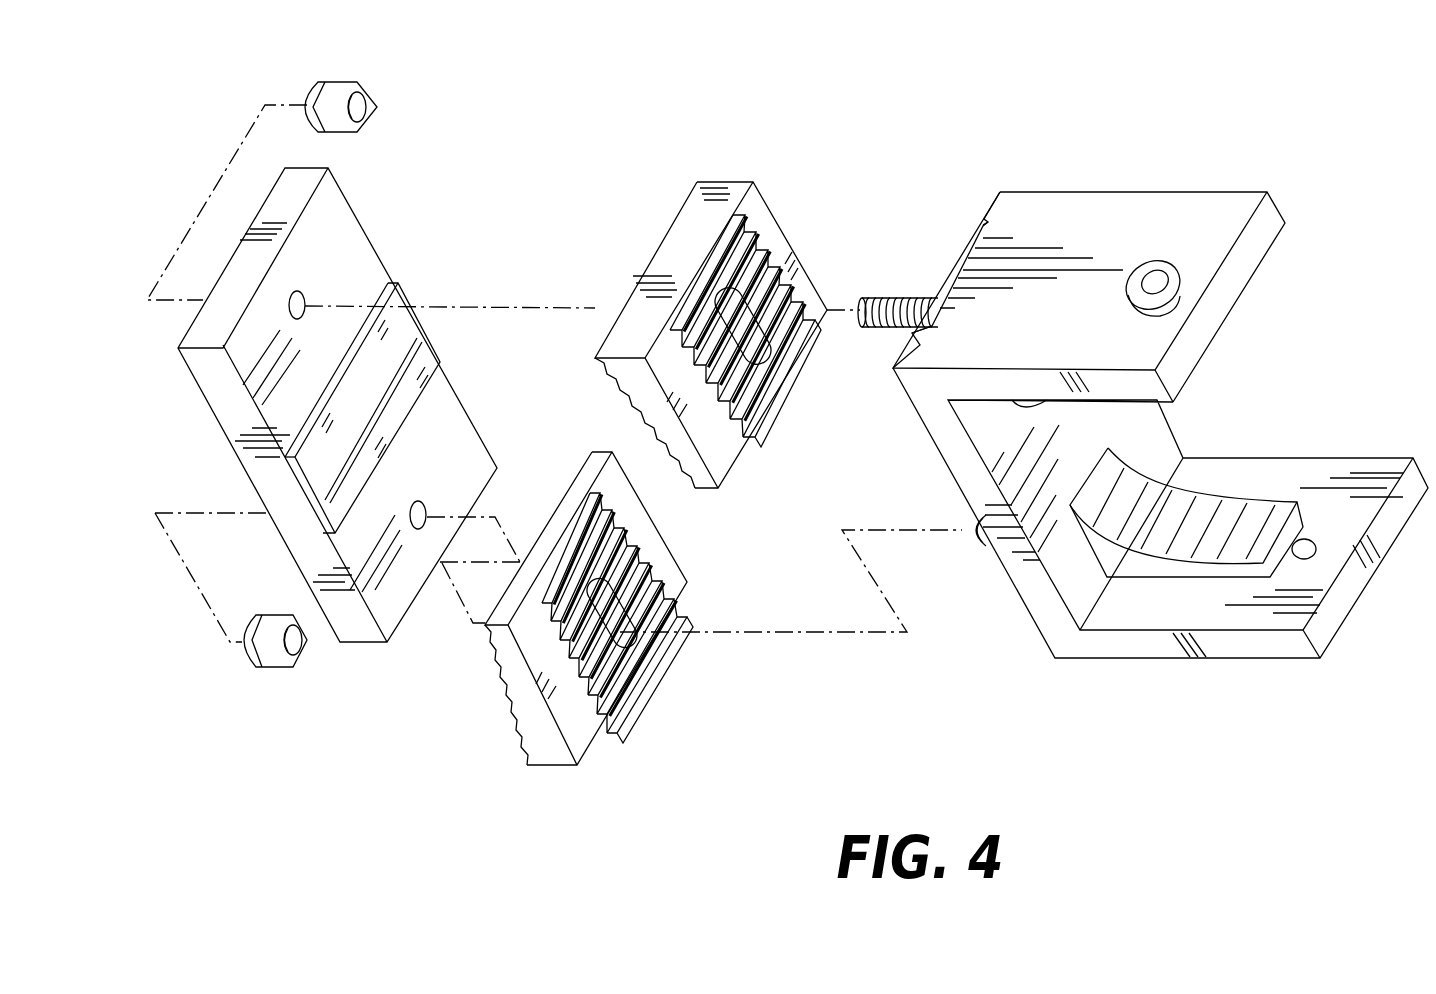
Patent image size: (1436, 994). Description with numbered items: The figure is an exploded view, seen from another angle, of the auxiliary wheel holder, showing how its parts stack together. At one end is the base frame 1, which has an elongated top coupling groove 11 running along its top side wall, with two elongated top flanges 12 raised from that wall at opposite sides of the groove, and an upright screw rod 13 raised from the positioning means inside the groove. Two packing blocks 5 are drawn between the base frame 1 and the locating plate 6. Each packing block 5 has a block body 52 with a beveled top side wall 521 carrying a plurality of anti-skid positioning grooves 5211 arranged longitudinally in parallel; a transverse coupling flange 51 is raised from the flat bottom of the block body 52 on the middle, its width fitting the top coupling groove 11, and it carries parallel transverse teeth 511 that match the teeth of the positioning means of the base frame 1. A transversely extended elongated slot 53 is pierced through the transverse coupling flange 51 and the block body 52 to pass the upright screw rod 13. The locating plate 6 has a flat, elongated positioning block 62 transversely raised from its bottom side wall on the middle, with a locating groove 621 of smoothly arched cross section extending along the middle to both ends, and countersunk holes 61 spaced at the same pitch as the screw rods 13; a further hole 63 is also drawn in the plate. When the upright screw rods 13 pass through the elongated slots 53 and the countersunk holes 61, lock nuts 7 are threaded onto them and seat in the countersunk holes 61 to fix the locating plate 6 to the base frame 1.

The base frame 1 is at (1129, 369).
The packing block 5 is at (621, 493).
The locating plate 6 is at (343, 405).
The lock nut 7 is at (358, 70).
The elongated top coupling groove 11 is at (975, 243).
The elongated top flange 12 is at (985, 221).
The upright screw rod 13 is at (898, 295).
The transverse coupling flange 51 is at (681, 514).
The block body 52 is at (612, 511).
The elongated slot 53 is at (737, 290).
The countersunk hole 61 is at (298, 296).
The elongated positioning block 62 is at (396, 393).
The hole 63 is at (417, 500).
The transverse teeth 511 is at (733, 300).
The beveled top side wall 521 is at (546, 584).
The locating groove 621 is at (437, 347).
The anti-skid positioning grooves 5211 is at (546, 561).